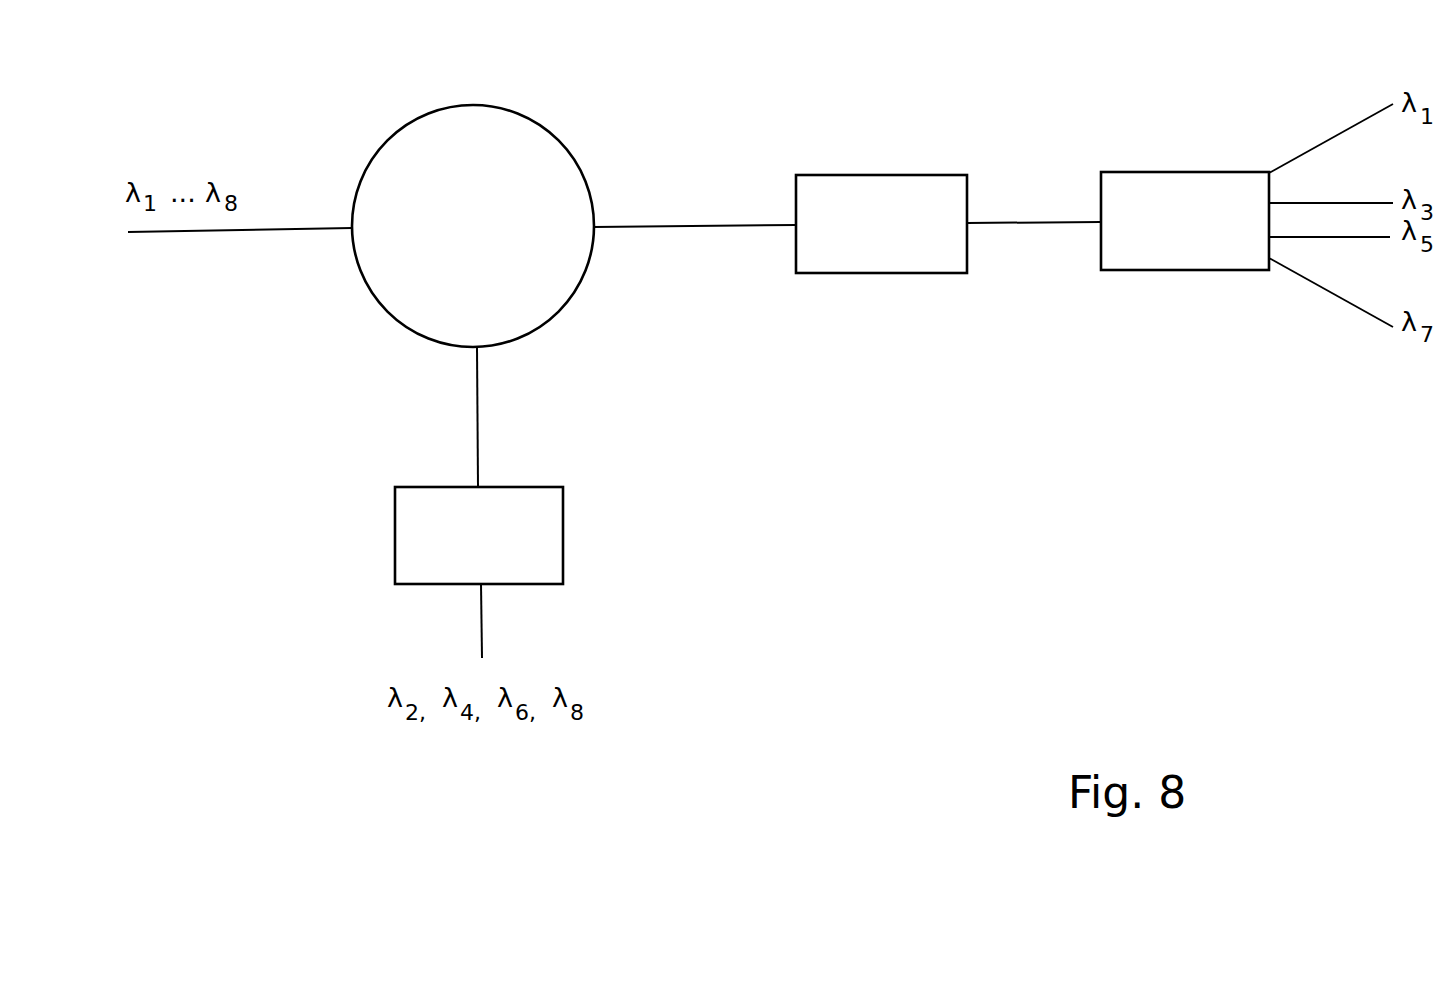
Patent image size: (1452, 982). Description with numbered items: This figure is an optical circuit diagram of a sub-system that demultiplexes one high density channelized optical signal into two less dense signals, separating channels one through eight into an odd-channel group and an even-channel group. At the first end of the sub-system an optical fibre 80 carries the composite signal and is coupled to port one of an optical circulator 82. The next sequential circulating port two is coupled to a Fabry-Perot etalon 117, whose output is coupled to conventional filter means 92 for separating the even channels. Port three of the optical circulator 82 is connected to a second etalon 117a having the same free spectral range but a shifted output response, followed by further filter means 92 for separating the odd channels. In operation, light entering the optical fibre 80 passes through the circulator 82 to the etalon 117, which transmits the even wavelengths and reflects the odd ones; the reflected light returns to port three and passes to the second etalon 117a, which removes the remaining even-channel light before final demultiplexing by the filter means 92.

The optical fibre 80 is at (273, 232).
The optical circulator 82 is at (543, 153).
The second etalon 117a is at (837, 175).
The filter means 92 is at (1204, 172).
The Fabry-Perot etalon 117 is at (545, 487).